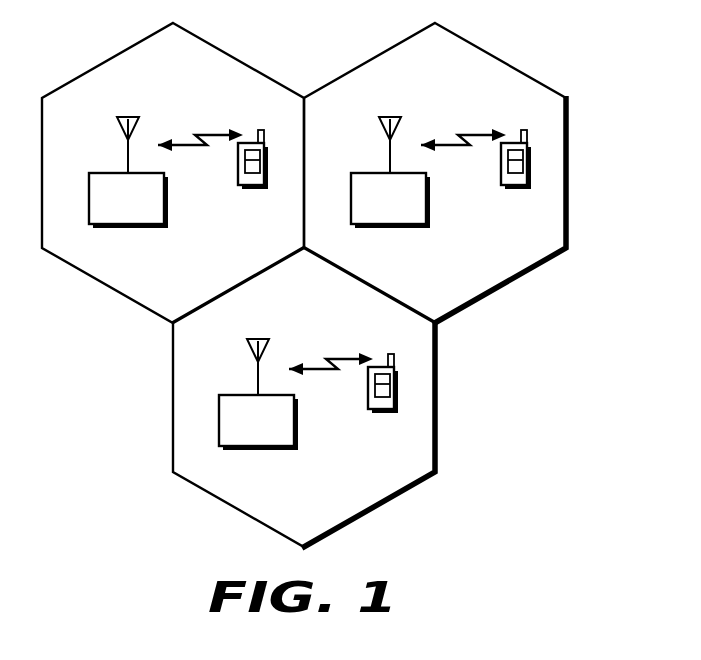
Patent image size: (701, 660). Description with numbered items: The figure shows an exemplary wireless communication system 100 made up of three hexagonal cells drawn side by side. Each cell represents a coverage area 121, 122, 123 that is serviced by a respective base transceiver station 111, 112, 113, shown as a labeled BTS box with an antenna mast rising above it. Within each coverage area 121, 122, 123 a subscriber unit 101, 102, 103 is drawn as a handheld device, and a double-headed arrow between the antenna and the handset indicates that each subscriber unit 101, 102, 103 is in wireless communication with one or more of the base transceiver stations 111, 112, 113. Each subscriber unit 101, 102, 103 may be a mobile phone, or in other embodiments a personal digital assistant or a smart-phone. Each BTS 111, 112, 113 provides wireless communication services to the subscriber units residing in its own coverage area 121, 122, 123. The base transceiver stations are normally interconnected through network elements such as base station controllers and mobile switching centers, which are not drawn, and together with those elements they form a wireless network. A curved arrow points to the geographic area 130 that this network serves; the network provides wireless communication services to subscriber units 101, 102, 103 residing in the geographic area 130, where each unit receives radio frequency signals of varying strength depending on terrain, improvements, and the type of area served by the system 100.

The wireless communication system 100 is at (160, 564).
The subscriber unit 101 is at (248, 188).
The subscriber unit 102 is at (508, 188).
The subscriber unit 103 is at (375, 411).
The base transceiver station 111 is at (133, 230).
The base transceiver station 112 is at (394, 230).
The base transceiver station 113 is at (262, 452).
The coverage area 121 is at (202, 40).
The coverage area 122 is at (464, 40).
The coverage area 123 is at (437, 400).
The geographic area 130 is at (552, 377).